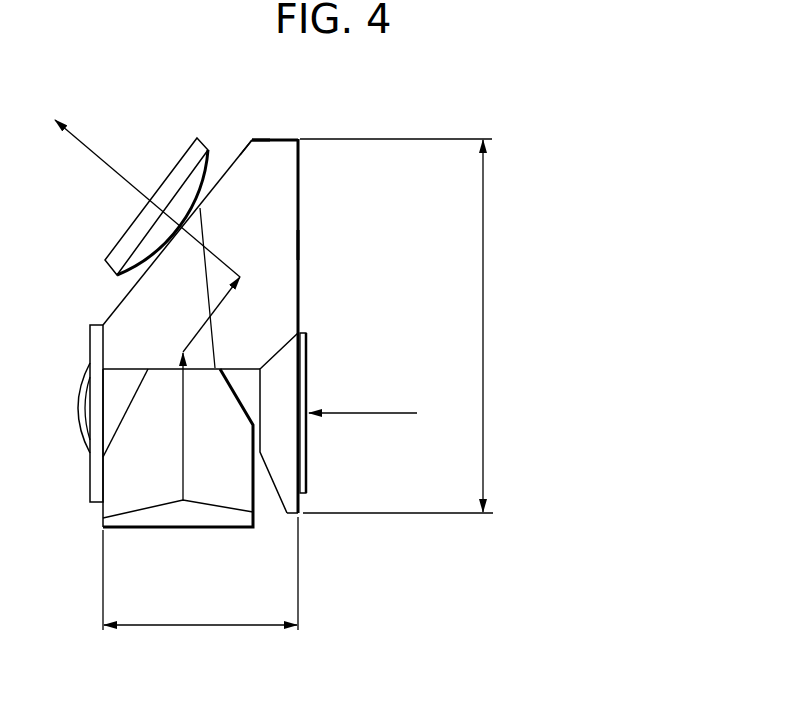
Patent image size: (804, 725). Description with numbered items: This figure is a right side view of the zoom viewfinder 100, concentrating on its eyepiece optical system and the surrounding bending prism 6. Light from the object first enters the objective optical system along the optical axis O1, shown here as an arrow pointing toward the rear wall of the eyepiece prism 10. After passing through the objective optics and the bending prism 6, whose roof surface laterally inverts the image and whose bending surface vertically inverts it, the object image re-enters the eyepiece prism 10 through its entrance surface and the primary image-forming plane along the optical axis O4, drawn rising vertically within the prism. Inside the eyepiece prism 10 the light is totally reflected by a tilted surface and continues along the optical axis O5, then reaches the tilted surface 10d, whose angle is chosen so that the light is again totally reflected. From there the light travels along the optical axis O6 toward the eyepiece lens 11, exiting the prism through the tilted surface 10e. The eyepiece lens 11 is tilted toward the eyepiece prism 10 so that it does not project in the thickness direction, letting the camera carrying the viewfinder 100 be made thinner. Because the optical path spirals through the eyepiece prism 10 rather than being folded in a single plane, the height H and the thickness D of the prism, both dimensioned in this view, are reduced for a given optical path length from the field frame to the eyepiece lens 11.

The viewfinder 100 is at (178, 90).
The eyepiece prism 10 is at (283, 170).
The tilted surface 10d is at (273, 243).
The tilted surface 10e is at (240, 148).
The bending prism 6 is at (187, 517).
The eyepiece lens 11 is at (105, 262).
The optical axis O1 is at (367, 413).
The optical axis O4 is at (180, 432).
The optical axis O5 is at (217, 306).
The optical axis O6 is at (85, 145).
The height H is at (405, 326).
The thickness D is at (200, 586).